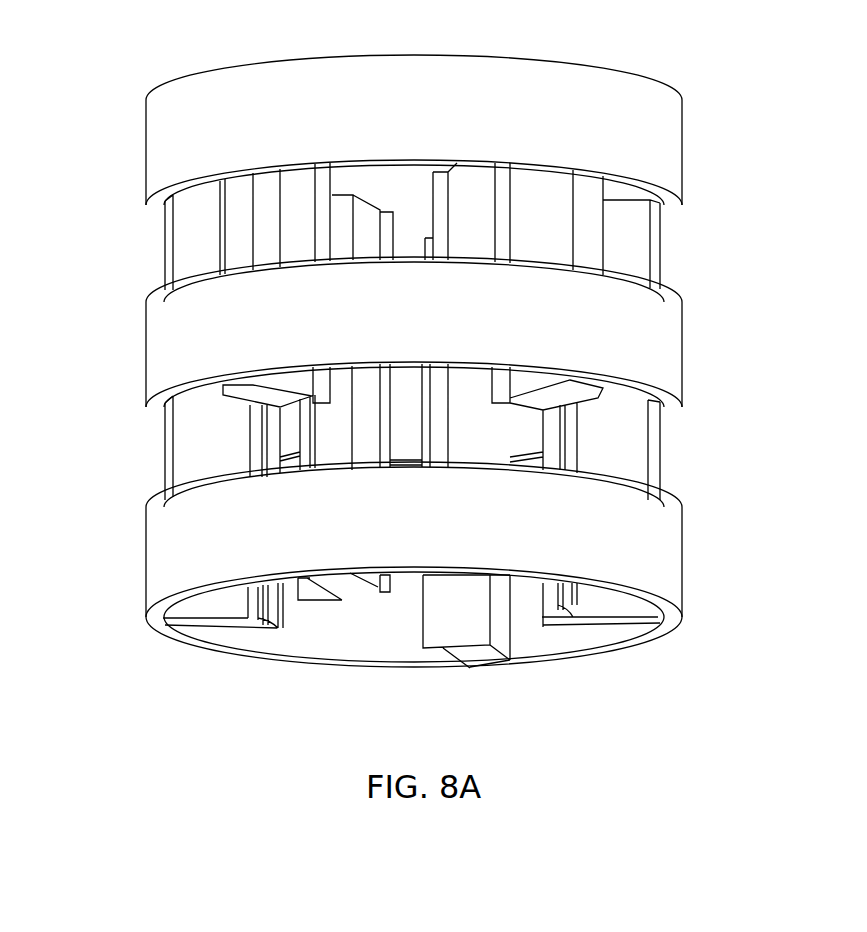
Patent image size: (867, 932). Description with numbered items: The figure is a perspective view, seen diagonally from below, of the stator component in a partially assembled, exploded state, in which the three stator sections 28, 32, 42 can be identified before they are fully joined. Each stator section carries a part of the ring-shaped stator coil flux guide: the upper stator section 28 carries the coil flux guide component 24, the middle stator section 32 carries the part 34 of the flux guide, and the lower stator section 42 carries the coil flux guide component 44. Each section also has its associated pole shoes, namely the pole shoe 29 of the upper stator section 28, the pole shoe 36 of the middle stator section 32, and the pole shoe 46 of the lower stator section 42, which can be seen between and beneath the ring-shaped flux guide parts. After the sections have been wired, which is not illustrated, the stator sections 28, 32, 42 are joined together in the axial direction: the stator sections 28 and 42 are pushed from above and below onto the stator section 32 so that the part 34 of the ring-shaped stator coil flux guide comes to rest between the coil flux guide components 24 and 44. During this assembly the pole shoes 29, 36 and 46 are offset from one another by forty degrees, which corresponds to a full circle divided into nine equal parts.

The coil flux guide component 24 is at (672, 148).
The stator section 28 is at (106, 150).
The pole shoe 29 is at (593, 245).
The stator section 32 is at (106, 323).
The part of the ring-shaped stator coil flux guide 34 is at (670, 355).
The pole shoe 36 is at (477, 208).
The stator section 42 is at (106, 511).
The coil flux guide component 44 is at (672, 567).
The pole shoe 46 is at (647, 460).